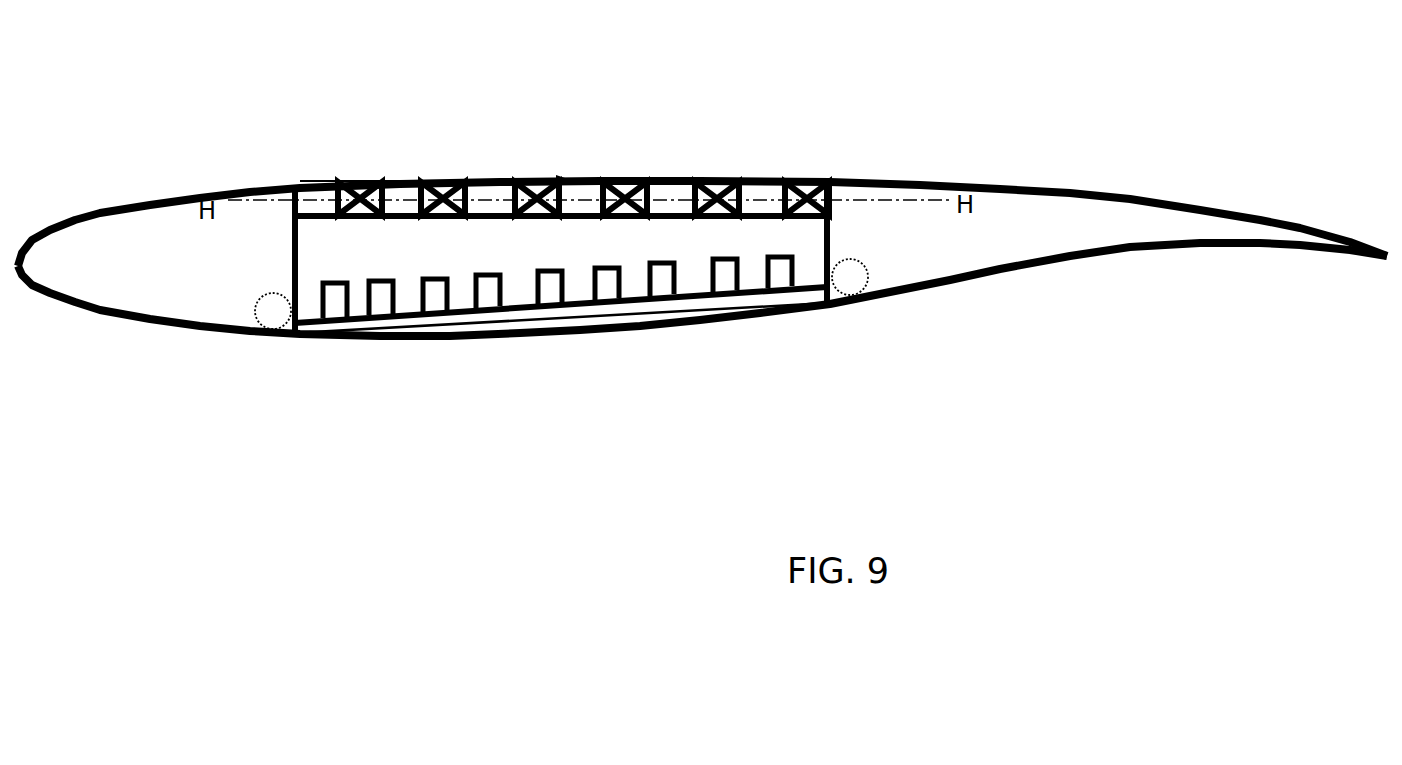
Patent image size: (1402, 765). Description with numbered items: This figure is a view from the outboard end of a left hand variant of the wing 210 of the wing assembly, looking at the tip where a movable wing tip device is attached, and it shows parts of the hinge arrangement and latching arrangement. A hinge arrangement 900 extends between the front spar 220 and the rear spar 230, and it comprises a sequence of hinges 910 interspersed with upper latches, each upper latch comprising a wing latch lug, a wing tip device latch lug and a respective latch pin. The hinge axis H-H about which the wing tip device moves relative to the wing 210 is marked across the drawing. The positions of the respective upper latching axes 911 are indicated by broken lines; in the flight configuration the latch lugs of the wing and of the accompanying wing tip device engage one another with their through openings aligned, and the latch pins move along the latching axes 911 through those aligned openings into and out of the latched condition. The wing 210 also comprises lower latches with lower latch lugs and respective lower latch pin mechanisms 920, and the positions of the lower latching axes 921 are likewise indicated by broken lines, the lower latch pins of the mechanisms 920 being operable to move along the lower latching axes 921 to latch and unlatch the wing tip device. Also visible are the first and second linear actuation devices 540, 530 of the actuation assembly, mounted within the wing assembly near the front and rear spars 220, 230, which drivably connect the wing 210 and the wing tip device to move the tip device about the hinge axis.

The wing 210 is at (150, 254).
The front spar 220 is at (287, 253).
The rear spar 230 is at (833, 237).
The second linear actuation device 530 is at (860, 282).
The first linear actuation device 540 is at (263, 315).
The hinge arrangement 900 is at (838, 166).
The hinges 910 is at (357, 187).
The latching axes 911 is at (312, 172).
The lower latch pin mechanisms 920 is at (322, 300).
The lower latching axes 921 is at (478, 353).